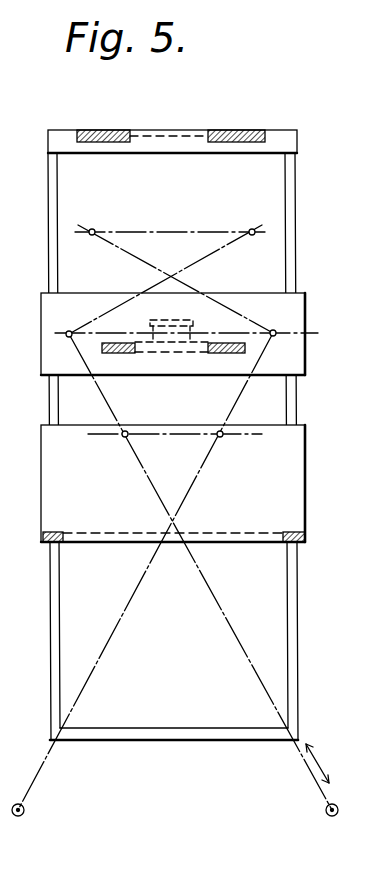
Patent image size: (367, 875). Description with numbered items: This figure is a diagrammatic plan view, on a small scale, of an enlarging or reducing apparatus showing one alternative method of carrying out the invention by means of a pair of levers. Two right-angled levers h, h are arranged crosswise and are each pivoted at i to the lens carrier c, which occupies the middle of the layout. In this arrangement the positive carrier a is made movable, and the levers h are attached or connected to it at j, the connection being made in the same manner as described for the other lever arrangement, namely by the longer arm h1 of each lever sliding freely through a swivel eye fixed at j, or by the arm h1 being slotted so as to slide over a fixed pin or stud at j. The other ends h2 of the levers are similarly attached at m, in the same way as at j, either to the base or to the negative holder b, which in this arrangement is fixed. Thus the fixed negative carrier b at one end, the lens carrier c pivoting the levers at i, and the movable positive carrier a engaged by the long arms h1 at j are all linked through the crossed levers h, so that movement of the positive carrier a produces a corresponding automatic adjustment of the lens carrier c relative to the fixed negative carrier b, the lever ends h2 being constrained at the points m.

The negative carrier b is at (103, 130).
The lens carrier c is at (40, 306).
The positive carrier a is at (173, 483).
The lever arm end h2 is at (240, 268).
The lever h is at (125, 302).
The attachment point m is at (170, 215).
The pivot i is at (66, 336).
The point of attachment j is at (122, 438).
The longer lever arm h1 is at (33, 782).